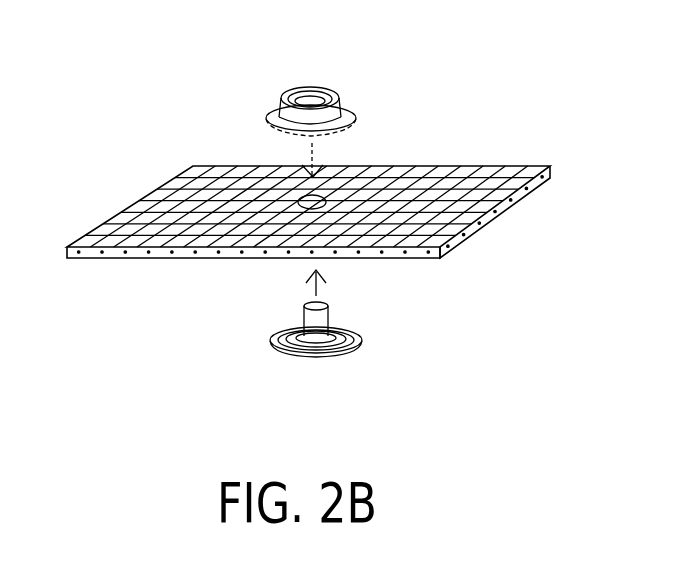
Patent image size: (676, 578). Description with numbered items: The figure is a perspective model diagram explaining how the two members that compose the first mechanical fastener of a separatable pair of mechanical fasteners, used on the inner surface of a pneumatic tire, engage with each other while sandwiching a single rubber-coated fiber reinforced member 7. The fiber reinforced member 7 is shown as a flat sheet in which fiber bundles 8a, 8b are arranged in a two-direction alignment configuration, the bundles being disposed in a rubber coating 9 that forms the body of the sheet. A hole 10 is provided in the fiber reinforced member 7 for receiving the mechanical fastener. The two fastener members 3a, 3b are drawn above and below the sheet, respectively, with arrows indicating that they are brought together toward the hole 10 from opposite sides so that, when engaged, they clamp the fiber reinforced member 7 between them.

The fastener member 3a is at (318, 88).
The fastener member 3b is at (318, 352).
The fiber reinforced member 7 is at (520, 177).
The fiber bundles 8a is at (422, 173).
The fiber bundles 8b is at (463, 178).
The rubber coating 9 is at (145, 255).
The hole 10 is at (322, 193).